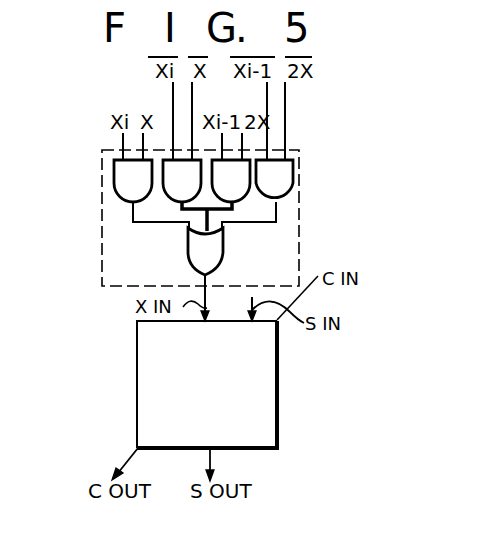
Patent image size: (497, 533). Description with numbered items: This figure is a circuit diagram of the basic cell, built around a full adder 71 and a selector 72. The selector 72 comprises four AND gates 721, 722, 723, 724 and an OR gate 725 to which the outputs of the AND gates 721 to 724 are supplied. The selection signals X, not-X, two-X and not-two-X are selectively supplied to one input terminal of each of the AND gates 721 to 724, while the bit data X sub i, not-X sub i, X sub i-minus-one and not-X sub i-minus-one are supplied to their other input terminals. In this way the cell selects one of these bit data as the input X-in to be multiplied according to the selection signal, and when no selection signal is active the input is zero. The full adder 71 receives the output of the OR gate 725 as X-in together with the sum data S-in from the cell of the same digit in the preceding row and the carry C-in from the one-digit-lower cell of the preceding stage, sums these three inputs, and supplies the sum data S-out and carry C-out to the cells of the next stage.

The full adder 71 is at (279, 388).
The selector 72 is at (103, 180).
The AND gate 721 is at (288, 201).
The AND gate 722 is at (237, 200).
The AND gate 723 is at (167, 199).
The AND gate 724 is at (118, 193).
The OR gate 725 is at (217, 262).